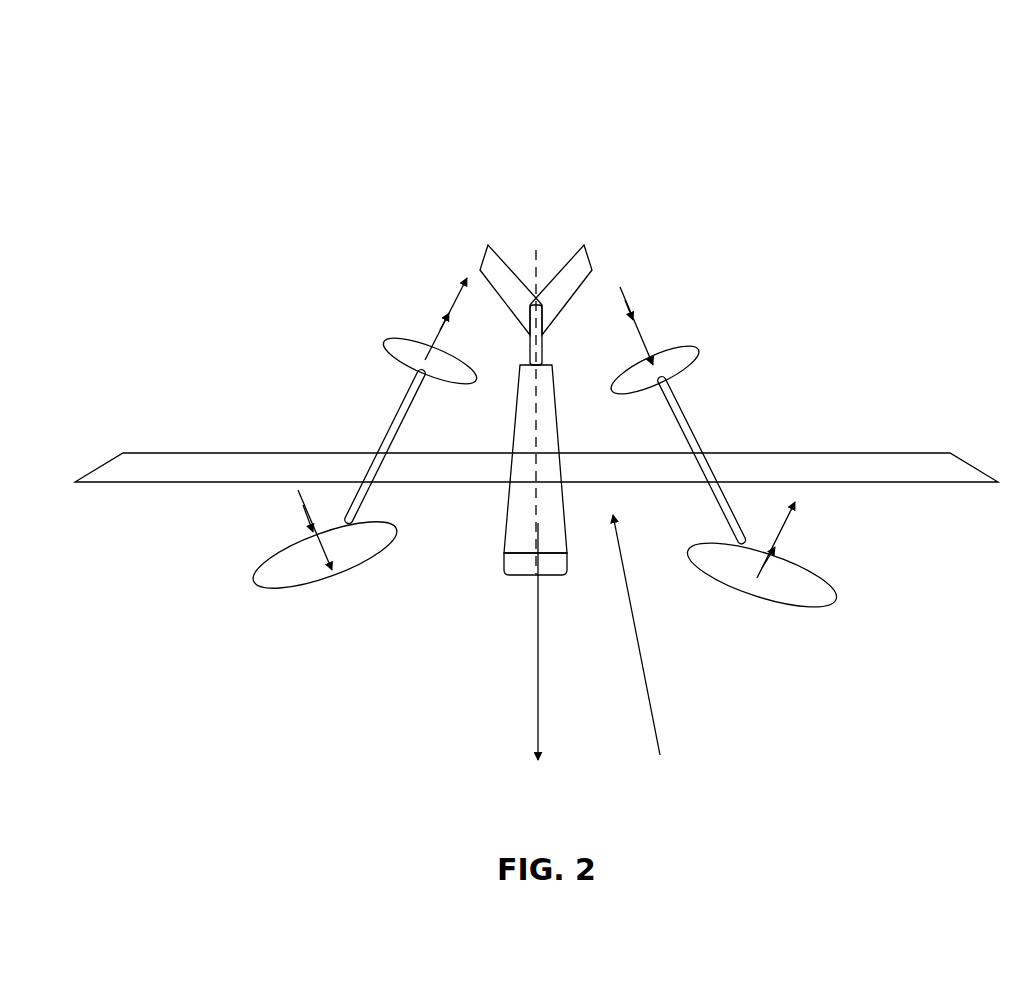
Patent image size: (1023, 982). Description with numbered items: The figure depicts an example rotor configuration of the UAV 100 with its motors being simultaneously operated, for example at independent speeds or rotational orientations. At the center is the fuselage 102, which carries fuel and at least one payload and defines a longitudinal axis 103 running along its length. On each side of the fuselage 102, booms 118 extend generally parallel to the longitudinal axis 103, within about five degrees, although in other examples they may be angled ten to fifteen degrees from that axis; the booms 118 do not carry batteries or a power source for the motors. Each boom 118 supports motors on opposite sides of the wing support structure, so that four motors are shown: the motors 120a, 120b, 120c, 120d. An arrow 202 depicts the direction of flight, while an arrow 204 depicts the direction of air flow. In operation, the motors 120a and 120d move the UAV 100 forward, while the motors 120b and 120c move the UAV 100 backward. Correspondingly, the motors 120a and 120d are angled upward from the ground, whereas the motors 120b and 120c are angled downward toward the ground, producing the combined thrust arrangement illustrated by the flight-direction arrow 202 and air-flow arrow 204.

The UAV 100 is at (888, 82).
The fuselage 102 is at (503, 540).
The longitudinal axis 103 is at (536, 290).
The booms 118 is at (390, 423).
The motor 120a is at (823, 605).
The motor 120b is at (692, 348).
The motor 120c is at (280, 568).
The motor 120d is at (397, 342).
The arrow 202 is at (540, 673).
The arrow 204 is at (642, 662).